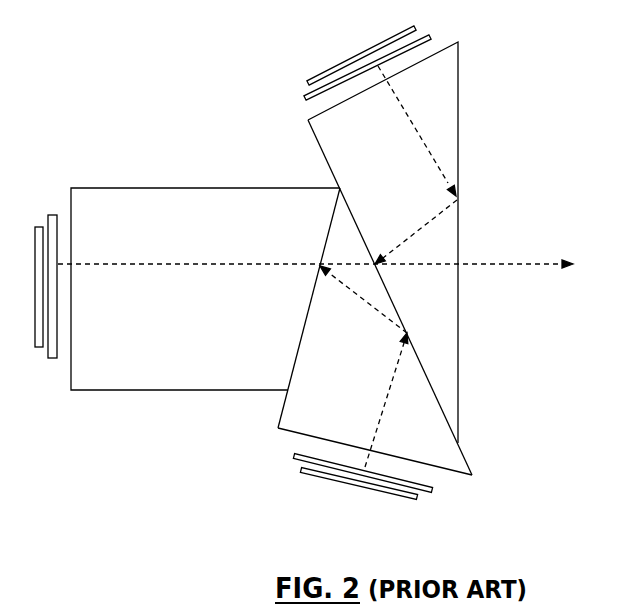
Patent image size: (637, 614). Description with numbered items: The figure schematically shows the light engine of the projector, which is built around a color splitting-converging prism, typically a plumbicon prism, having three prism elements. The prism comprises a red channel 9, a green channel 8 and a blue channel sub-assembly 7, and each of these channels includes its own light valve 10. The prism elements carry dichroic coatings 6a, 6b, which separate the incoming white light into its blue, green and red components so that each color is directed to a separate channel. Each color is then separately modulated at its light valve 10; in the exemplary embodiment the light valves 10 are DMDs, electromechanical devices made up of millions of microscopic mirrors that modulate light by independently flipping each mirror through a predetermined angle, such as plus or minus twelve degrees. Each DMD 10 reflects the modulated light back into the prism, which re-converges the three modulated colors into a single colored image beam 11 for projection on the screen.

The dichroic coating 6a is at (322, 152).
The dichroic coating 6b is at (324, 244).
The blue channel sub-assembly 7 is at (468, 102).
The green channel 8 is at (152, 400).
The red channel 9 is at (436, 460).
The light valve 10 is at (323, 488).
The colored image beam 11 is at (483, 273).